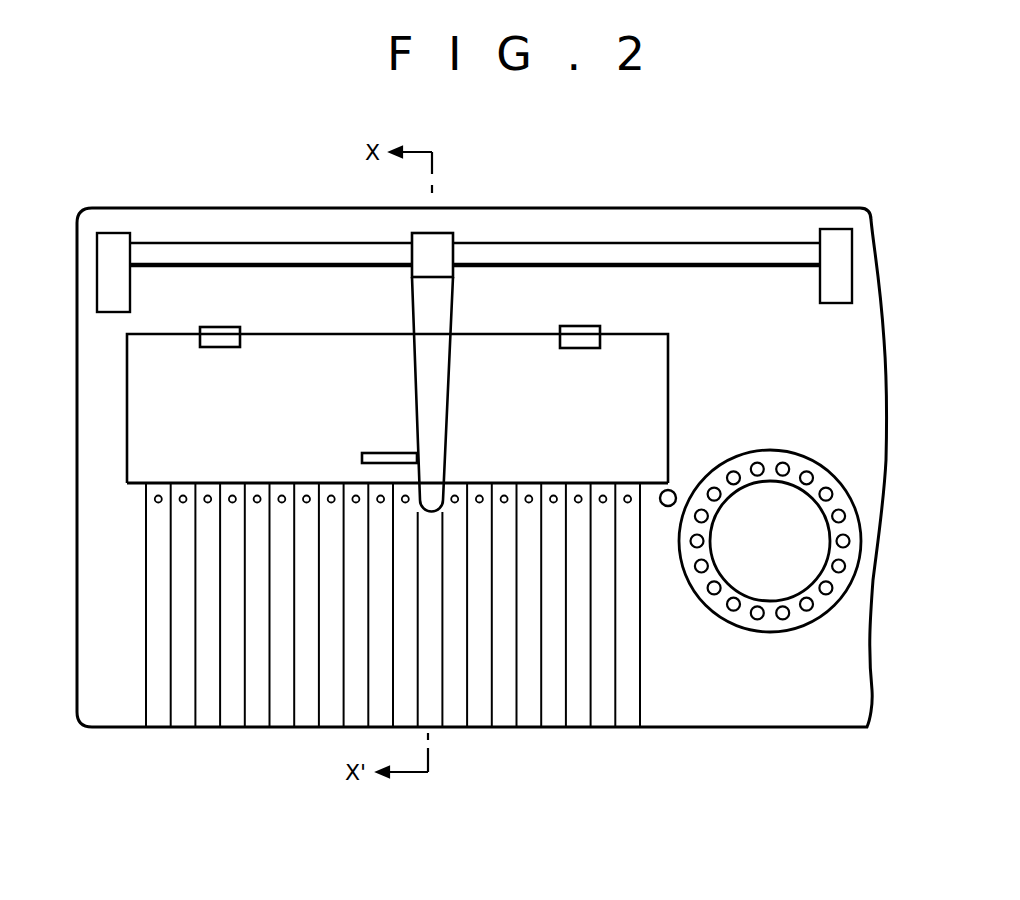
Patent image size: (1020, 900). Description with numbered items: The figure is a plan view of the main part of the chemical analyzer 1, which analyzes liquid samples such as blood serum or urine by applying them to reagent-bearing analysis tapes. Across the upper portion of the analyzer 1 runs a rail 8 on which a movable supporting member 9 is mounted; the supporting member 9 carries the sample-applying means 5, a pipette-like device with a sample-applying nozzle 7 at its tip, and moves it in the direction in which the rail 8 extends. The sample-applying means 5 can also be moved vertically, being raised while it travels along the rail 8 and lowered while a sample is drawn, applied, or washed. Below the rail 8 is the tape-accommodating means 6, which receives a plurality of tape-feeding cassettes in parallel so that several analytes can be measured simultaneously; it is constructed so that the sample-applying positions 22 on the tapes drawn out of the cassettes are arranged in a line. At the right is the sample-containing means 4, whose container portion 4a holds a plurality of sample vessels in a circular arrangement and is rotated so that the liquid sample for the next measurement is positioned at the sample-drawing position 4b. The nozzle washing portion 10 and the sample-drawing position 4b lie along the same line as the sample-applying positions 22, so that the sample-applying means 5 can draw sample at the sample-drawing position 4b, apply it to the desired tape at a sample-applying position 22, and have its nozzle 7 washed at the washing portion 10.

The chemical analyzer 1 is at (700, 203).
The sample-containing means 4 is at (815, 465).
The container portion 4a is at (850, 539).
The sample-drawing position 4b is at (718, 488).
The sample-applying means 5 is at (413, 398).
The tape-accommodating means 6 is at (177, 452).
The sample-applying nozzle 7 is at (432, 490).
The rail 8 is at (567, 248).
The movable supporting member 9 is at (446, 246).
The nozzle washing portion 10 is at (668, 490).
The sample-applying positions 22 is at (553, 494).